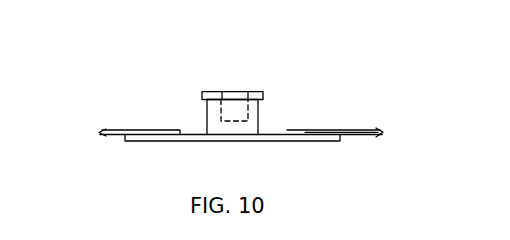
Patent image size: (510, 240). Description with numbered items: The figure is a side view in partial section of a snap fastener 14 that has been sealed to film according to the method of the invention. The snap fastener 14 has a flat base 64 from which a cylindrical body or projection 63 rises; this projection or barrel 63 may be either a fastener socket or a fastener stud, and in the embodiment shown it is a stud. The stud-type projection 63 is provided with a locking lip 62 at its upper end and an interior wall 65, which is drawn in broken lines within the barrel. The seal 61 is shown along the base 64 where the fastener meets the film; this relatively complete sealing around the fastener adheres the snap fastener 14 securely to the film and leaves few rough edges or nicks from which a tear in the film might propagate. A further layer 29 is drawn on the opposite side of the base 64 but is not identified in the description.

The snap fastener 14 is at (257, 74).
The conductor strip 29 is at (382, 132).
The seal 61 is at (154, 132).
The locking lip 62 is at (263, 97).
The cylindrical body or projection 63 is at (206, 117).
The base 64 is at (173, 141).
The interior wall 65 is at (244, 92).